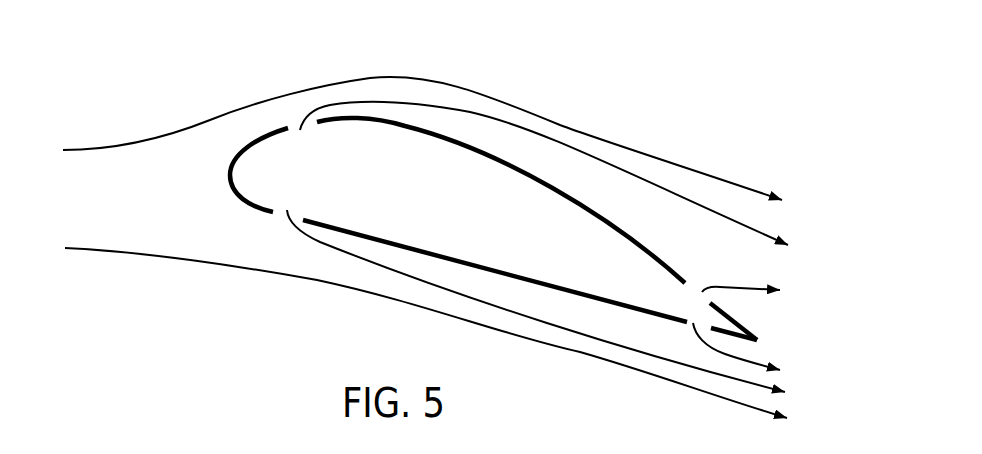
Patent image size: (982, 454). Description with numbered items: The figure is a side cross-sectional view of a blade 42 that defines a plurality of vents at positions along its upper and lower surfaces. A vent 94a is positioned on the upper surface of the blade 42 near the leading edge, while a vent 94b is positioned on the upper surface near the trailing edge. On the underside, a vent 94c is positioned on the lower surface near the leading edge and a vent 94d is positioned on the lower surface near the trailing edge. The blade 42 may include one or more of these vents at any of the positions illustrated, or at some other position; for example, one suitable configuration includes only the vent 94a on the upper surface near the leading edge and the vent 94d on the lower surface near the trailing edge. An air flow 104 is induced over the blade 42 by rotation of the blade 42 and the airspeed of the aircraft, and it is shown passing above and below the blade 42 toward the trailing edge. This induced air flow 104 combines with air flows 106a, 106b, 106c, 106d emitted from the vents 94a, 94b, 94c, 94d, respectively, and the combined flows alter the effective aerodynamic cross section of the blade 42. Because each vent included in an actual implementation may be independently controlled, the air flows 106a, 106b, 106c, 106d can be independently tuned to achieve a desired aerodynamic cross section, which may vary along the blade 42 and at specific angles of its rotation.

The blade 42 is at (573, 193).
The vent 94a is at (317, 123).
The vent 94b is at (682, 282).
The vent 94c is at (302, 218).
The vent 94d is at (683, 315).
The air flow 104 is at (125, 147).
The air flow 106a is at (342, 103).
The air flow 106b is at (750, 288).
The air flow 106c is at (320, 243).
The air flow 106d is at (752, 362).